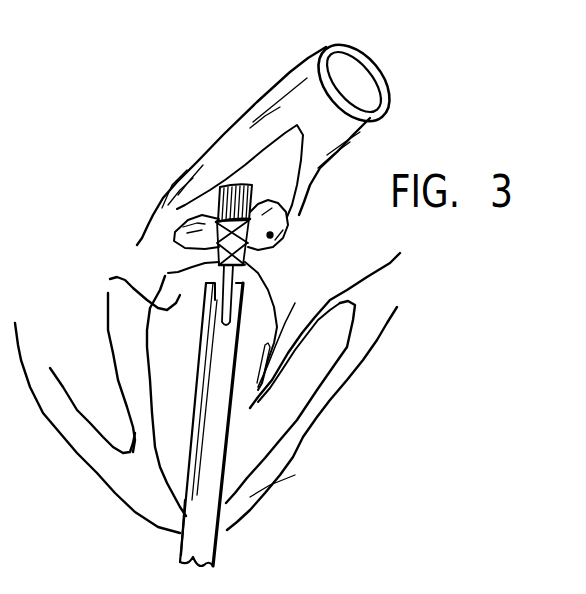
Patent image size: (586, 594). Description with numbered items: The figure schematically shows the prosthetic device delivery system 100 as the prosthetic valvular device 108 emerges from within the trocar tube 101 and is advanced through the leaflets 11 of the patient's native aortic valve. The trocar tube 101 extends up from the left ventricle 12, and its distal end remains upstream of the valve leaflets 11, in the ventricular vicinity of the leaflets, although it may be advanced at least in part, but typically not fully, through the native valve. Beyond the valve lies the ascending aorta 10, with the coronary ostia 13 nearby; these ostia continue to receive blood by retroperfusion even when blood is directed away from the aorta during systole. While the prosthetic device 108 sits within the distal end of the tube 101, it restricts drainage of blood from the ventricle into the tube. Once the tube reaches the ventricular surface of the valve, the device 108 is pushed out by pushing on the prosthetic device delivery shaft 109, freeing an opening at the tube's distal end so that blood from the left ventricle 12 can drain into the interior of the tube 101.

The ascending aorta 10 is at (380, 110).
The leaflets 11 is at (280, 250).
The left ventricle 12 is at (110, 279).
The coronary ostia 13 is at (289, 216).
The prosthetic device delivery system 100 is at (232, 457).
The trocar tube 101 is at (200, 538).
The prosthetic valvular device 108 is at (221, 205).
The prosthetic device delivery shaft 109 is at (168, 273).